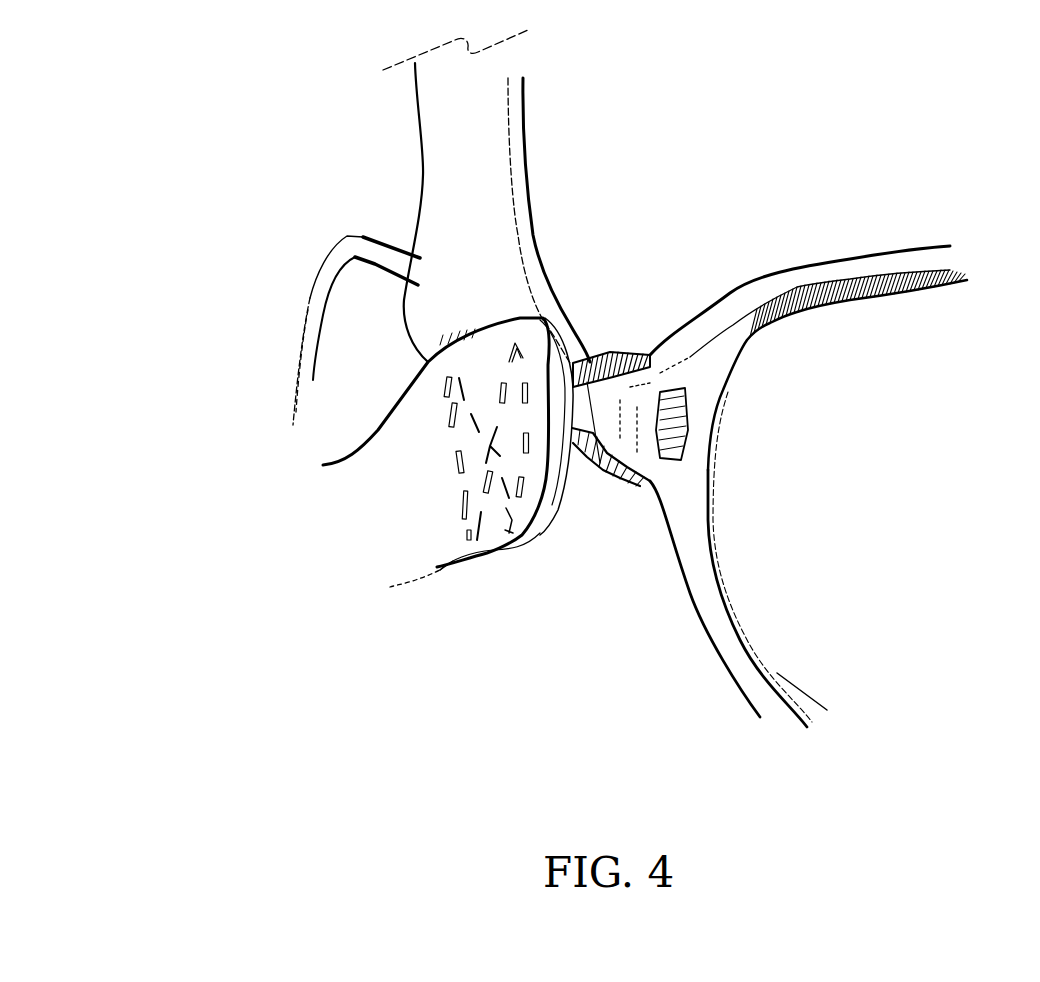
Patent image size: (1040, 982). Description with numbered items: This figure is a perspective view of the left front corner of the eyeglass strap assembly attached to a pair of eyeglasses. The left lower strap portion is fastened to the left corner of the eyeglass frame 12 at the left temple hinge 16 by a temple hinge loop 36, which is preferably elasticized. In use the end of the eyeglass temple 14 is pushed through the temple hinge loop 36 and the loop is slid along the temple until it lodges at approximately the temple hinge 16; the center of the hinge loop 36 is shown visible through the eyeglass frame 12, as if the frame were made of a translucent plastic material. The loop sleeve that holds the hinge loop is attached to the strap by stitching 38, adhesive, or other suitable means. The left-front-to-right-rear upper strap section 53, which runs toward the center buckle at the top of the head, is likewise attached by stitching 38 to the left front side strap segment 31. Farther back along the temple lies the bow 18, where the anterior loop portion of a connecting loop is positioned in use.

The eyeglass frame 12 is at (817, 277).
The eyeglass temple 14 is at (377, 240).
The left temple hinge 16 is at (610, 417).
The bow 18 is at (322, 295).
The left front side strap segment 31 is at (423, 547).
The temple hinge loop 36 is at (602, 428).
The stitching 38 is at (478, 448).
The left-front-to-right-rear upper strap section 53 is at (447, 110).